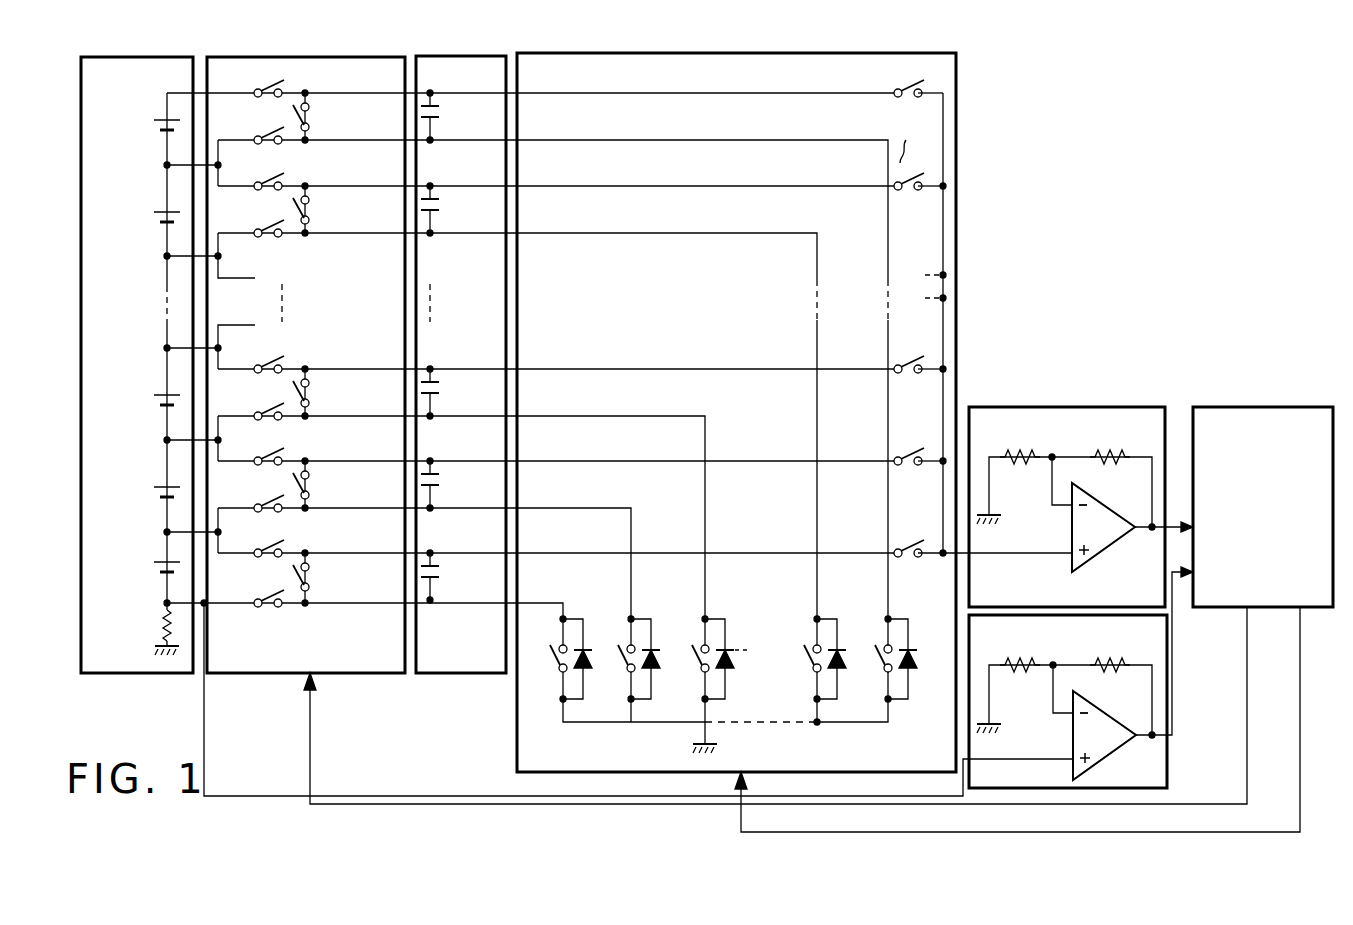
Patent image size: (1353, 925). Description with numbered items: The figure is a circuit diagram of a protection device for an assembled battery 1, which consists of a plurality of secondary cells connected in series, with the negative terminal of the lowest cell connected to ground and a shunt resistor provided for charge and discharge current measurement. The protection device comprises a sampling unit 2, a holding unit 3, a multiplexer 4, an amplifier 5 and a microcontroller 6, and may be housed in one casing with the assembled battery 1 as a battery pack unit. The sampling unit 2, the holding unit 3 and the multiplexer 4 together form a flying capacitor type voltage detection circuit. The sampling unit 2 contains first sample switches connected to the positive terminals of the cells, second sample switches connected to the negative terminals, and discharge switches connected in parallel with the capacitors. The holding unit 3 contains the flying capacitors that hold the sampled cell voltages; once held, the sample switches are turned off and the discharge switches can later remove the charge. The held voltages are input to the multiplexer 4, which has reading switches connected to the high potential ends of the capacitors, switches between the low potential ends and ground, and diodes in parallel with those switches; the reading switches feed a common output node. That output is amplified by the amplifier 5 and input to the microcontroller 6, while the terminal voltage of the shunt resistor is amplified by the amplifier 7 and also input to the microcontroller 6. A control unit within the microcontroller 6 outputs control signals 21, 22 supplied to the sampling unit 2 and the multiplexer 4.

The assembled battery 1 is at (138, 58).
The sampling unit 2 is at (330, 58).
The holding unit 3 is at (460, 58).
The multiplexer 4 is at (781, 56).
The amplifier 5 is at (1089, 399).
The microcontroller 6 is at (1254, 399).
The amplifier 7 is at (1167, 750).
The control signal 21 is at (1196, 804).
The control signal 22 is at (1196, 839).